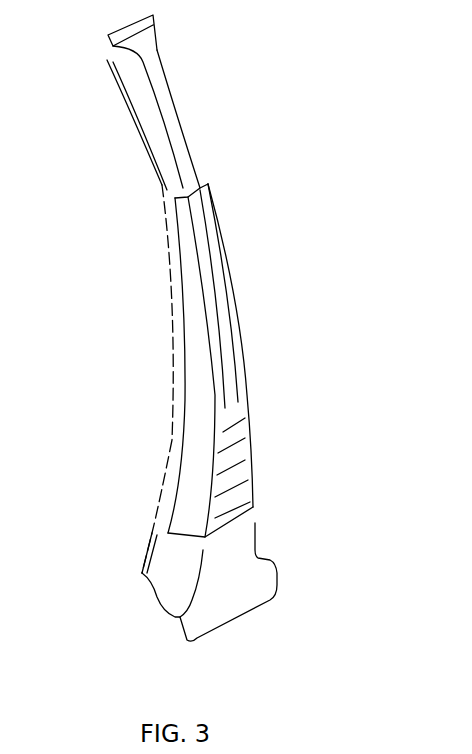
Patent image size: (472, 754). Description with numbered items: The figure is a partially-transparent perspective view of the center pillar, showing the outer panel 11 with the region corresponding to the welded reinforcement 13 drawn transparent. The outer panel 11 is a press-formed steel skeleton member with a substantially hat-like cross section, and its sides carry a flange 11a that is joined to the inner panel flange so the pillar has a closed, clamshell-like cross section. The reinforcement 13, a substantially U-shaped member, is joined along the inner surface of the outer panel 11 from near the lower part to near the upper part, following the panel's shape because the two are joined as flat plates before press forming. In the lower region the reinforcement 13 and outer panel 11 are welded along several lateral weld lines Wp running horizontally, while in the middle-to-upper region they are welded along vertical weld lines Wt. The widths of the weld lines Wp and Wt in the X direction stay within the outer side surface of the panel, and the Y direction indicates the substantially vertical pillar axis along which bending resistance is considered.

The outer panel 11 is at (178, 105).
The flange 11a is at (142, 137).
The reinforcement 13 is at (197, 452).
The vertical weld lines Wt is at (215, 263).
The lateral weld lines Wp is at (235, 433).
The X direction X is at (284, 621).
The Y direction Y is at (127, 212).